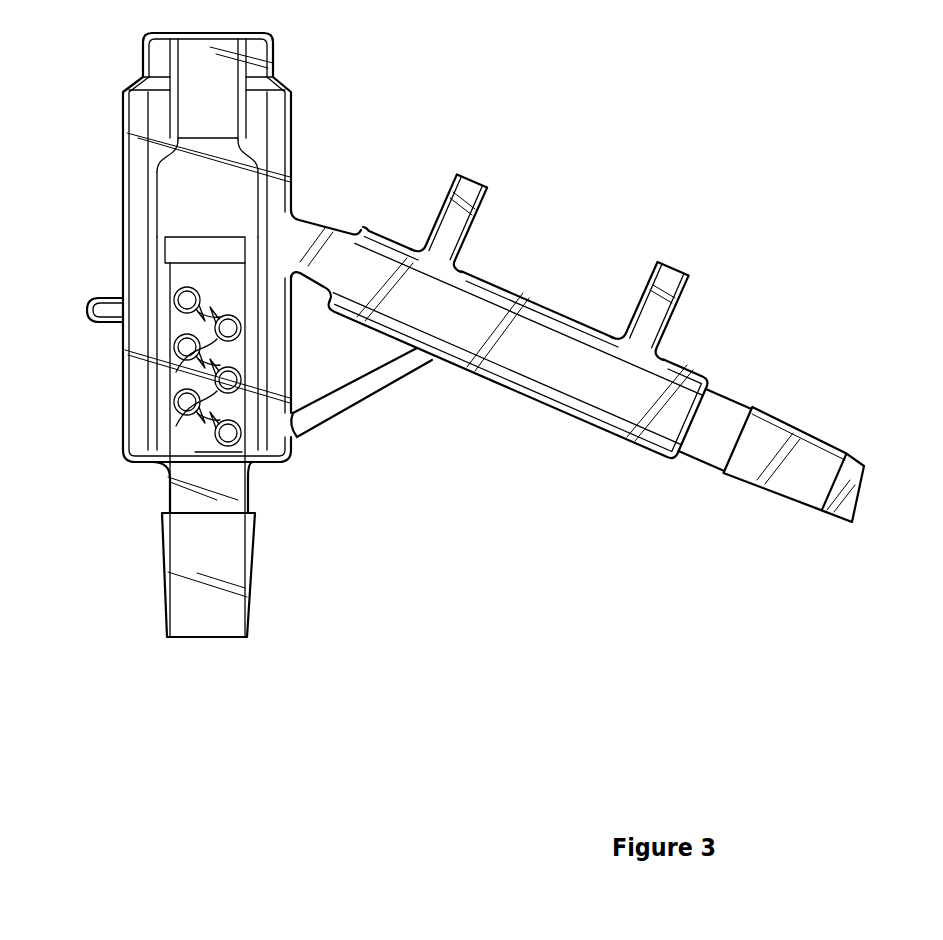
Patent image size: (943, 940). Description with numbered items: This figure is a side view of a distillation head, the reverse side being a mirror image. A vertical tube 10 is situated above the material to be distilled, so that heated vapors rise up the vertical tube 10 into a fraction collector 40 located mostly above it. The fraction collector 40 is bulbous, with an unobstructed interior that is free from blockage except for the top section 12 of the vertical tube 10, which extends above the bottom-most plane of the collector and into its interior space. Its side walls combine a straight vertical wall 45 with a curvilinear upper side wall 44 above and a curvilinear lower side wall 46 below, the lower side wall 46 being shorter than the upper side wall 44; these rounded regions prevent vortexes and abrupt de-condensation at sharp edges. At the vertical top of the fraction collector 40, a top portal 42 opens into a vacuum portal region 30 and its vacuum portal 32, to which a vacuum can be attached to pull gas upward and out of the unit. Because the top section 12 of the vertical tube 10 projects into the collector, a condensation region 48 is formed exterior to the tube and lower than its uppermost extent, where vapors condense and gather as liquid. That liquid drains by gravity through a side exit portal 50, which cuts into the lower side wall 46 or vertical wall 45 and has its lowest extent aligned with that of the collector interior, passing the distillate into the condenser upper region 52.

The vertical tube 10 is at (170, 382).
The top section of the vertical tube 12 is at (213, 238).
The vacuum portal region 30 is at (230, 60).
The vacuum portal 32 is at (213, 33).
The fraction collector 40 is at (178, 203).
The top portal 42 is at (200, 140).
The curvilinear upper side wall 44 is at (160, 170).
The vertical wall 45 is at (152, 196).
The curvilinear lower side wall 46 is at (157, 267).
The condensation region 48 is at (254, 254).
The side exit portal 50 is at (315, 243).
The condenser upper region 52 is at (335, 252).